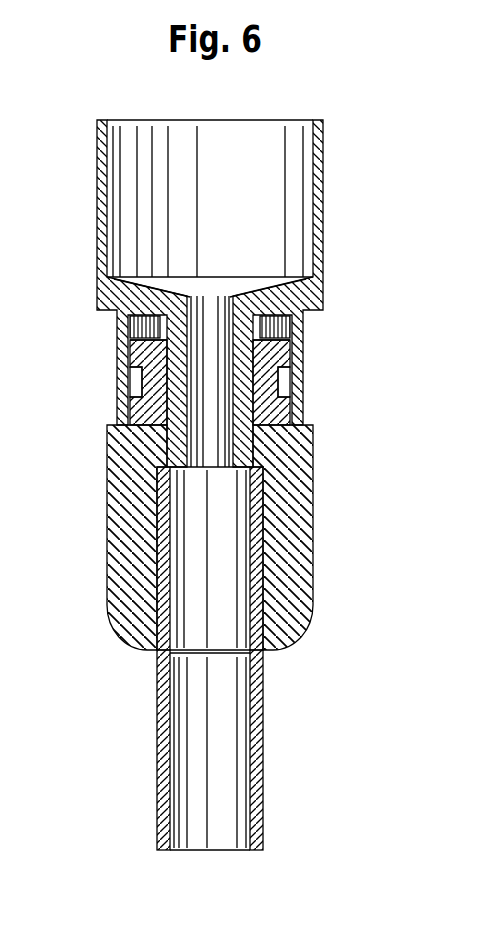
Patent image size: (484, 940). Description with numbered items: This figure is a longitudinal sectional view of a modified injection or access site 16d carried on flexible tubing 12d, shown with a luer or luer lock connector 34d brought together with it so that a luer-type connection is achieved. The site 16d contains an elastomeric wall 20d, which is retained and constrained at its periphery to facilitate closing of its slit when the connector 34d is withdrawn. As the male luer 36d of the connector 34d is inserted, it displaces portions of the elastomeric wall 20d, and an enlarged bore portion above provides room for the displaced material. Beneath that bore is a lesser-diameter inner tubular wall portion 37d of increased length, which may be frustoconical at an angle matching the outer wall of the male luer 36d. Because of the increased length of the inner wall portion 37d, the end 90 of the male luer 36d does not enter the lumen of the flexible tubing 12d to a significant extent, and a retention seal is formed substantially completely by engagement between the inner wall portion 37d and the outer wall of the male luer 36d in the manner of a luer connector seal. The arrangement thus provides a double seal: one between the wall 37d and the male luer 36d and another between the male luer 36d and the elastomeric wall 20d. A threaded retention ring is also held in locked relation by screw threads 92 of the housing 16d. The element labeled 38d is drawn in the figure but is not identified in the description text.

The luer lock connector 34d is at (328, 217).
The inner tubular wall portion 37d is at (257, 433).
The end of male luer 90 is at (153, 483).
The injection site 16d is at (322, 585).
The flexible tubing 12d is at (265, 761).
The retaining ring 38d is at (302, 357).
The male luer 36d is at (250, 386).
The elastomeric wall 20d is at (130, 352).
The screw threads 92 is at (133, 400).